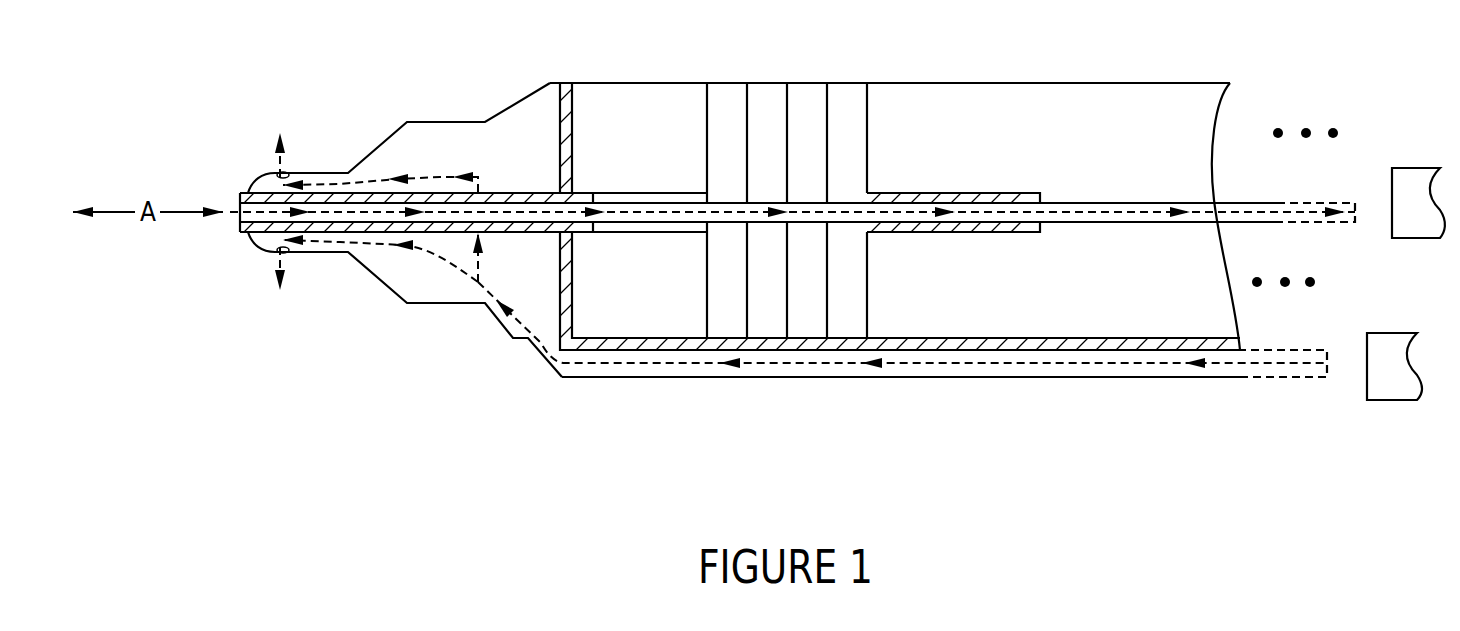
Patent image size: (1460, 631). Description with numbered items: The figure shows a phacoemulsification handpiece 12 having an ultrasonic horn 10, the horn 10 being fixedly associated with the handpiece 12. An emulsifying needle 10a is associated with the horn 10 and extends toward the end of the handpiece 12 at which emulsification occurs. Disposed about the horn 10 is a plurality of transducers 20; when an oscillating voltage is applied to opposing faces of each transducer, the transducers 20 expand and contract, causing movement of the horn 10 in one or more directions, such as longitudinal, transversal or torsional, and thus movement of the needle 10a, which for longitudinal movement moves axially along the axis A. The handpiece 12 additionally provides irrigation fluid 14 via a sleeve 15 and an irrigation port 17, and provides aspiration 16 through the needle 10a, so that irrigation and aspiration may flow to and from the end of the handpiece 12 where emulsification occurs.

The ultrasonic horn 10 is at (578, 192).
The emulsifying needle 10a is at (237, 190).
The phacoemulsification handpiece 12 is at (1069, 54).
The irrigation fluid 14 is at (1053, 378).
The sleeve 15 is at (385, 293).
The aspiration 16 is at (1097, 203).
The irrigation port 17 is at (285, 173).
The transducers 20 is at (727, 100).